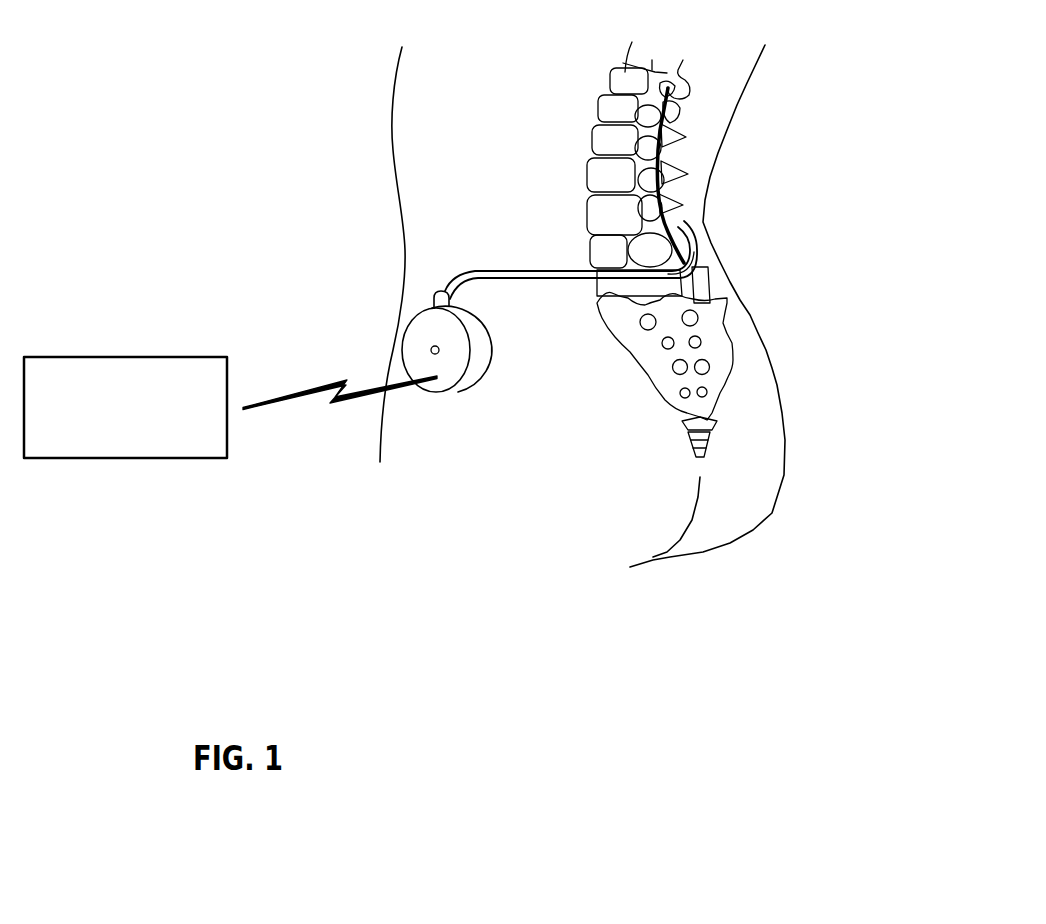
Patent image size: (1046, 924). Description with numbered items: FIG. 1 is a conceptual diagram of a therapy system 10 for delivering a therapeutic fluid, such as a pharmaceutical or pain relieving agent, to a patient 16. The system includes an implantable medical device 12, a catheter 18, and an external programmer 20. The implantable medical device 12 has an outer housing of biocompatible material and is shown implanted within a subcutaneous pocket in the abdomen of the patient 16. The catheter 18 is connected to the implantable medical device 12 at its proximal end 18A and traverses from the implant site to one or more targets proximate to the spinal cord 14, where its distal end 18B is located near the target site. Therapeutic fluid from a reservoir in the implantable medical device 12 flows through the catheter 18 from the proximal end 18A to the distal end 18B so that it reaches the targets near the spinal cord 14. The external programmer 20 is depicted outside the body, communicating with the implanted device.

The therapy system 10 is at (363, 284).
The implantable medical device 12 is at (411, 391).
The spinal cord 14 is at (685, 205).
The patient 16 is at (745, 82).
The catheter 18 is at (488, 262).
The proximal end 18A is at (442, 293).
The distal end 18B is at (686, 232).
The external programmer 20 is at (111, 431).